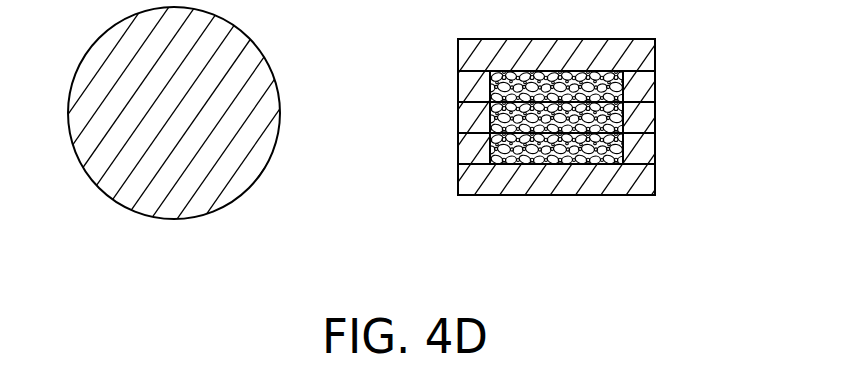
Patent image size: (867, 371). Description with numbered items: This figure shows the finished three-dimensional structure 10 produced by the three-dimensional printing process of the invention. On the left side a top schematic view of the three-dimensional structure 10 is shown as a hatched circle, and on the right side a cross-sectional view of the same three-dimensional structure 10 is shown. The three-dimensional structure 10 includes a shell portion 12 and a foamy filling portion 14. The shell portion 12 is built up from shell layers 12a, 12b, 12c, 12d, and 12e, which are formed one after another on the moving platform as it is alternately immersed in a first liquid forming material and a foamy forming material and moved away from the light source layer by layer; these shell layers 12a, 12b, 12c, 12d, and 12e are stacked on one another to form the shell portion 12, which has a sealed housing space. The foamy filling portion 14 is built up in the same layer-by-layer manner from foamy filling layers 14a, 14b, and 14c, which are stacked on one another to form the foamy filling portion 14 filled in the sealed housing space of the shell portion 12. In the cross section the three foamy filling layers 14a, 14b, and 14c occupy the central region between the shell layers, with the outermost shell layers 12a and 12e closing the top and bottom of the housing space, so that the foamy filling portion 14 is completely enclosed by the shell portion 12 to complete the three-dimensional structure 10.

The three-dimensional structure 10 is at (401, 159).
The shell portion 12 is at (401, 159).
The shell layer 12a is at (641, 56).
The shell layer 12b is at (641, 92).
The shell layer 12c is at (641, 127).
The shell layer 12d is at (644, 153).
The shell layer 12e is at (755, 22).
The foamy filling portion 14 is at (556, 195).
The foamy filling layer 14a is at (510, 153).
The foamy filling layer 14b is at (553, 135).
The foamy filling layer 14c is at (561, 166).